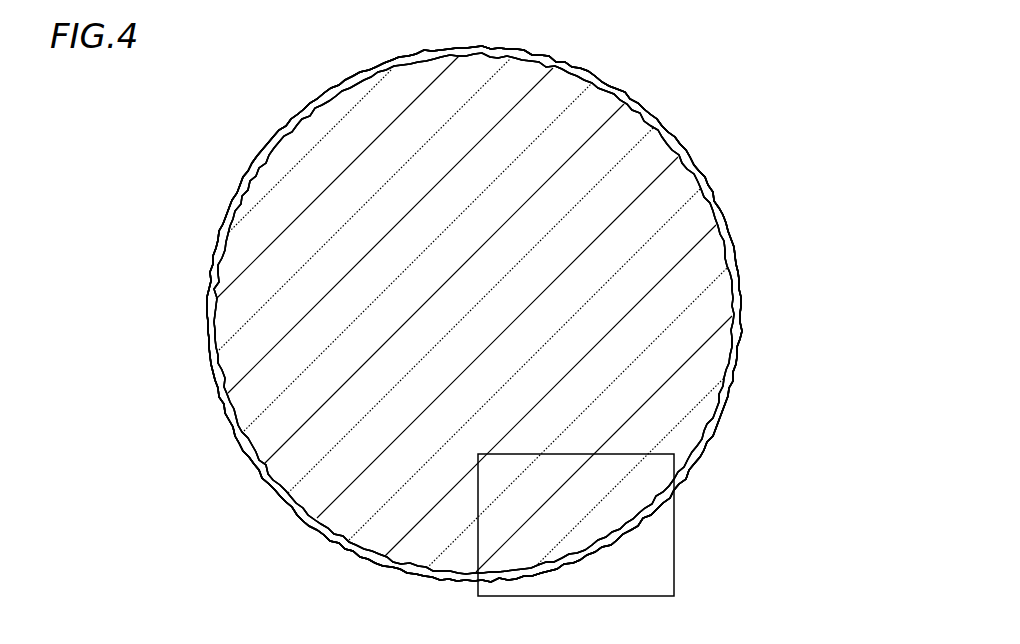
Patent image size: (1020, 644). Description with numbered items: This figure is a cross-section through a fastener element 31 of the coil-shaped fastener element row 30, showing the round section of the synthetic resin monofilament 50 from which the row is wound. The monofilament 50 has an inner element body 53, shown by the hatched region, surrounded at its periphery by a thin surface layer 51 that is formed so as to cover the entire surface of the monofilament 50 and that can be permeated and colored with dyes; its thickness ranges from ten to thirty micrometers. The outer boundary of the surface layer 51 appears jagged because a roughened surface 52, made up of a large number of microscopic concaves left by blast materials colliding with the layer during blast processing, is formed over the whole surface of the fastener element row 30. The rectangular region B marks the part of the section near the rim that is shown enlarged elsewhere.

The fastener element 31 is at (651, 98).
The fastener element row 30 is at (474, 314).
The monofilament 50 is at (687, 143).
The surface layer 51 is at (716, 200).
The roughened surface 52 is at (735, 250).
The element body 53 is at (712, 300).
The enlarged region B is at (675, 562).